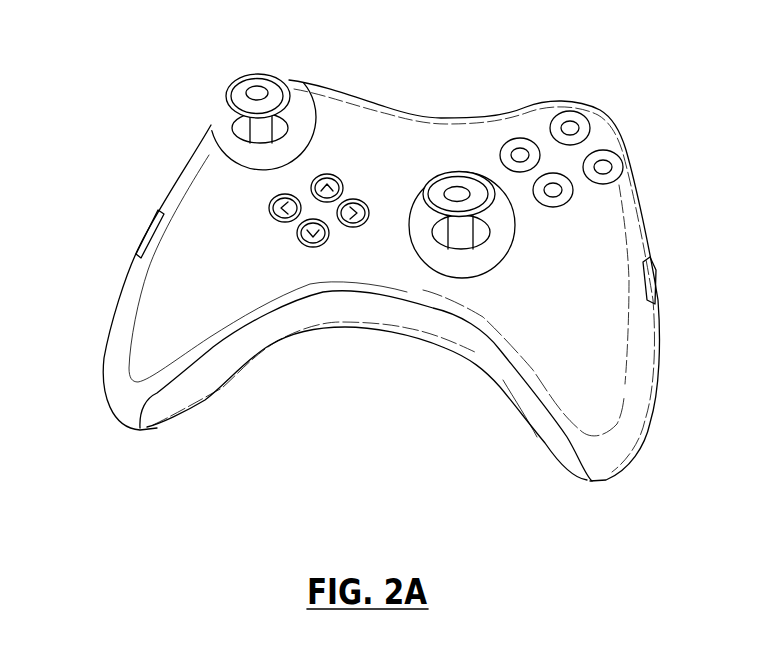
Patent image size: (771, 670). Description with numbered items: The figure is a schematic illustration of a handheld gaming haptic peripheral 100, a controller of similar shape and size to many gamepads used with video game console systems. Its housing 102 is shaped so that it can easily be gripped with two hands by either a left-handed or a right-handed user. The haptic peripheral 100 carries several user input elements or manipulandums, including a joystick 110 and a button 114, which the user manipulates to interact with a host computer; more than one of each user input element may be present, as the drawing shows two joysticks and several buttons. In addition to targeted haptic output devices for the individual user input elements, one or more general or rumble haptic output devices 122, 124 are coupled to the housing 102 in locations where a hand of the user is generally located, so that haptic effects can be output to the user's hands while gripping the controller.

The haptic peripheral 100 is at (435, 279).
The housing 102 is at (633, 218).
The joystick 110 is at (425, 188).
The button 114 is at (570, 127).
The rumble haptic output device 122 is at (657, 293).
The rumble haptic output device 124 is at (134, 217).